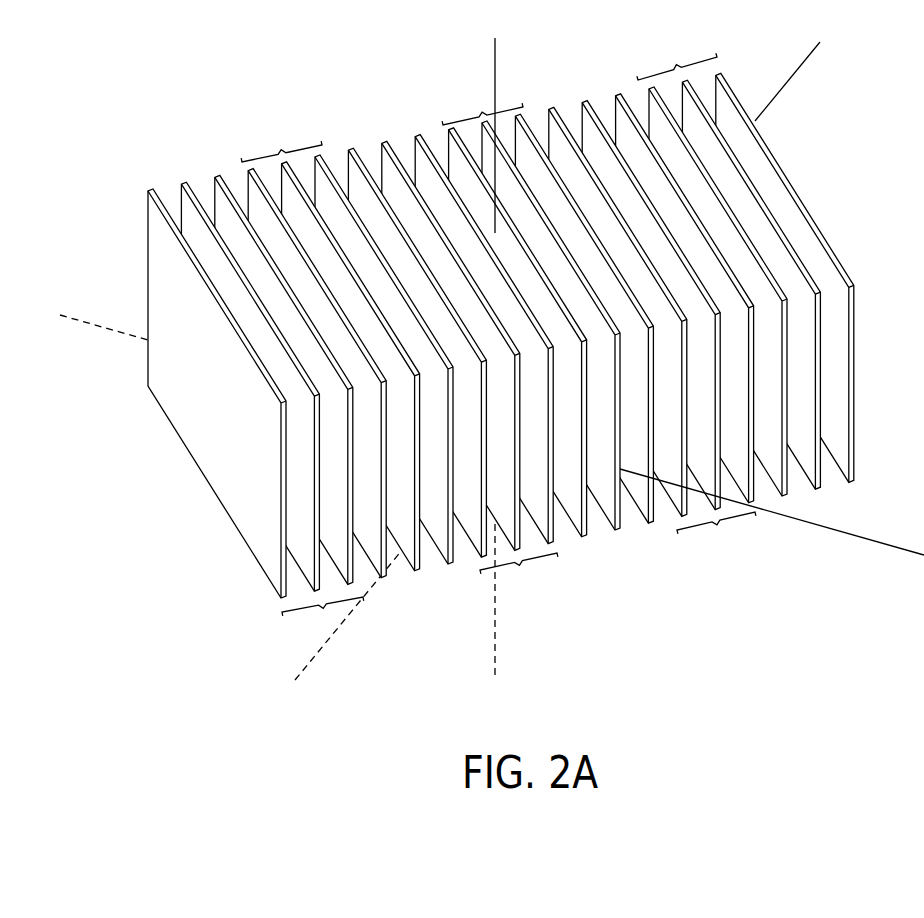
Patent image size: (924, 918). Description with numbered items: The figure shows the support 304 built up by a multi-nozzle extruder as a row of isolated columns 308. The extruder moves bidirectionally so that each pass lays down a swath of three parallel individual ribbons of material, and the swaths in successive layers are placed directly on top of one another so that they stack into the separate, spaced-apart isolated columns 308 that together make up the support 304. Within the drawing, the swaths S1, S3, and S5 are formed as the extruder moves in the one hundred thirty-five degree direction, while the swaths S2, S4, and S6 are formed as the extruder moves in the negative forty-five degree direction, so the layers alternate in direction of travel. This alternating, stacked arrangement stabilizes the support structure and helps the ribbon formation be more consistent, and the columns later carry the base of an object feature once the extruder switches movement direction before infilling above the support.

The support 304 is at (514, 338).
The isolated columns 308 is at (222, 468).
The swath S1 is at (677, 56).
The swath S2 is at (716, 539).
The swath S3 is at (482, 99).
The swath S4 is at (519, 580).
The swath S5 is at (281, 136).
The swath S6 is at (323, 623).